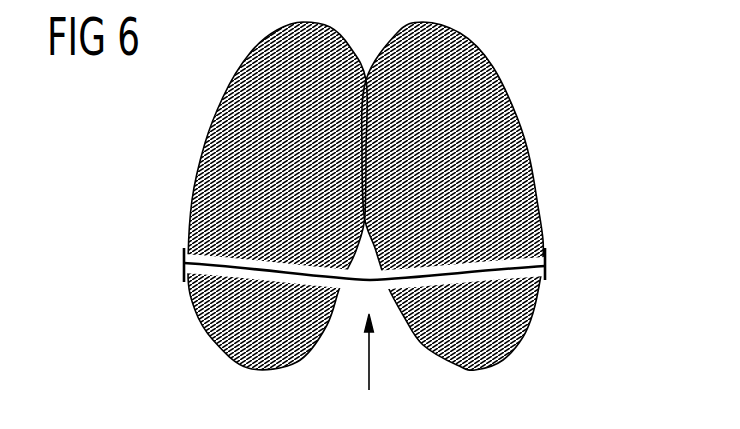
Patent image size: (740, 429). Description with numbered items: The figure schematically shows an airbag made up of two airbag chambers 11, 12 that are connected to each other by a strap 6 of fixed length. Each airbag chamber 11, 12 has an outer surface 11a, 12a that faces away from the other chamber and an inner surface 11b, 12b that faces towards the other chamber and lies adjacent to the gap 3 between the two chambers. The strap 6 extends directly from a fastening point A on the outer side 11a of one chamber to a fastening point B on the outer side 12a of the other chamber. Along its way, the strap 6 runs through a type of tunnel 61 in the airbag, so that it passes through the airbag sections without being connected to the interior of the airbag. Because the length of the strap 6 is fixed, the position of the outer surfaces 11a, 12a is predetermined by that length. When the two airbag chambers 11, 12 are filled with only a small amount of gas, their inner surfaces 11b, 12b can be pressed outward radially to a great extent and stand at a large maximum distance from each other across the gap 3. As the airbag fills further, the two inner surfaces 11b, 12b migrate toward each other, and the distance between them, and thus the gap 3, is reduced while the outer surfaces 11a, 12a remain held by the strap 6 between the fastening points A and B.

The airbag chamber 11 is at (213, 152).
The airbag chamber 12 is at (507, 147).
The outer surface 11a is at (195, 310).
The inner surface 11b is at (323, 318).
The outer surface 12a is at (525, 337).
The inner surface 12b is at (410, 328).
The strap 6 is at (537, 235).
The tunnel 61 is at (518, 262).
The gap 3 is at (369, 370).
The fastening point A is at (183, 266).
The fastening point B is at (548, 268).